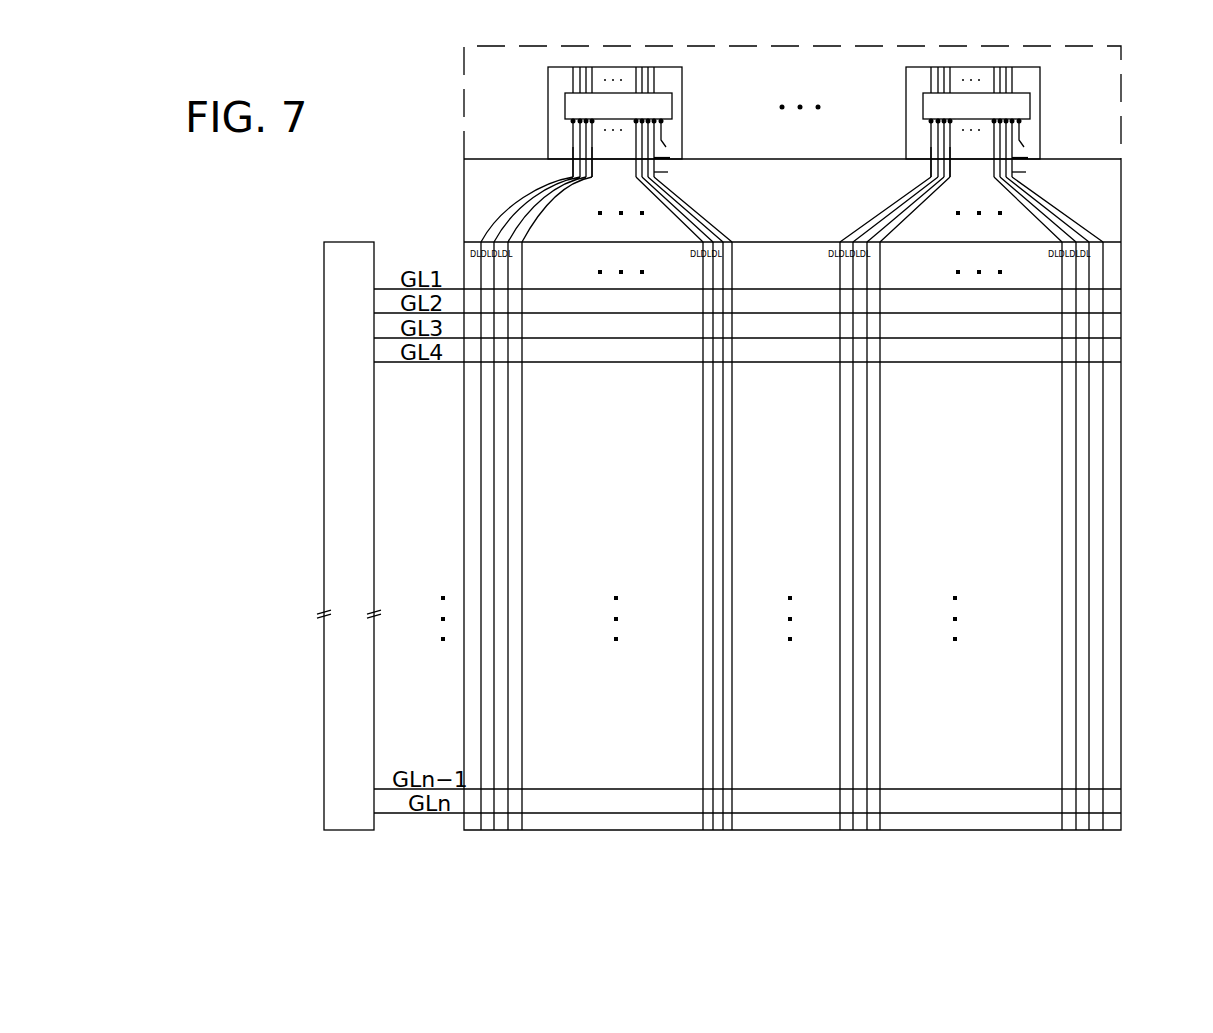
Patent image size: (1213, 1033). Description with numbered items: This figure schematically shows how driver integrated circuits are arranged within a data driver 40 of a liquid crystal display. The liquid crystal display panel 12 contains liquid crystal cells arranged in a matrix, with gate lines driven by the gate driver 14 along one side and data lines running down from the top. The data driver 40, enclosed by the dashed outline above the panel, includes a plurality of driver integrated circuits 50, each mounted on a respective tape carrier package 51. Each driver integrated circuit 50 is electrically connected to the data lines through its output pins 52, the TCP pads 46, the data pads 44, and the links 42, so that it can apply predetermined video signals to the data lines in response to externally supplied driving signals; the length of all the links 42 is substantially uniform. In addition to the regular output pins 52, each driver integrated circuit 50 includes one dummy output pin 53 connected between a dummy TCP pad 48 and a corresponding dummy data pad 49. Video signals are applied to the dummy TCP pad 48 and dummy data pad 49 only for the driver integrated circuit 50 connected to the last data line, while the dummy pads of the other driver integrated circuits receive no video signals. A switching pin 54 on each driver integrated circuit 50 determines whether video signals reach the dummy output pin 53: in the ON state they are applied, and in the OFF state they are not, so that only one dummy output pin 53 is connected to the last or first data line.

The liquid crystal display panel 12 is at (1122, 382).
The gate driver 14 is at (349, 832).
The data driver 40 is at (1010, 46).
The link 42 is at (524, 202).
The data pad 44 is at (572, 177).
The TCP pad 46 is at (592, 166).
The dummy TCP pad 48 is at (670, 160).
The dummy data pad 49 is at (668, 172).
The driver integrated circuit 50 is at (672, 105).
The tape carrier package 51 is at (683, 74).
The output pin 52 is at (592, 146).
The dummy output pin 53 is at (668, 146).
The switching pin 54 is at (665, 122).